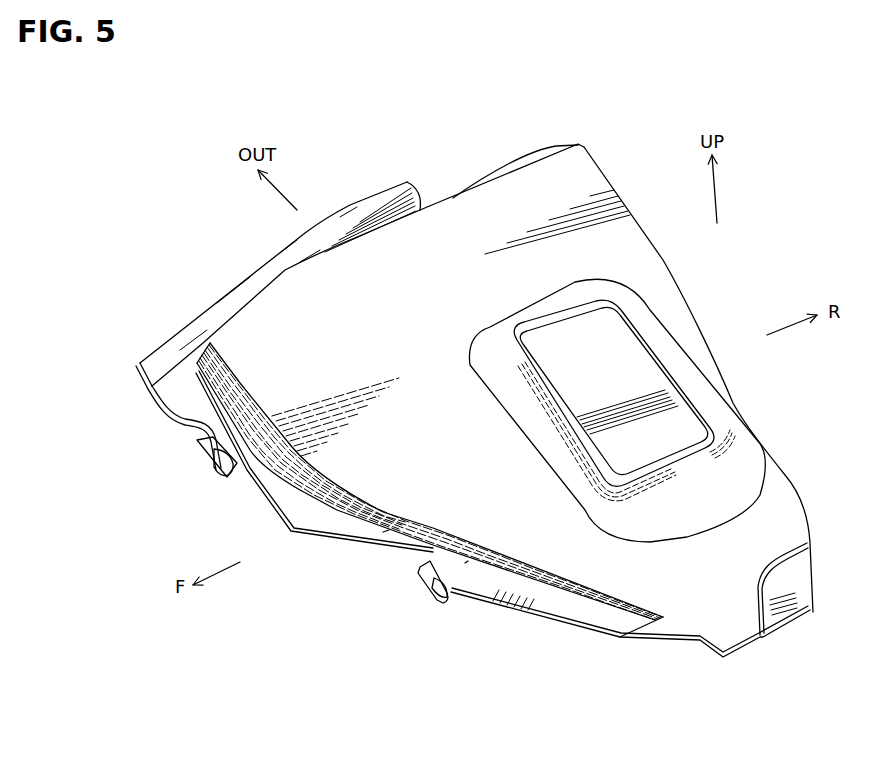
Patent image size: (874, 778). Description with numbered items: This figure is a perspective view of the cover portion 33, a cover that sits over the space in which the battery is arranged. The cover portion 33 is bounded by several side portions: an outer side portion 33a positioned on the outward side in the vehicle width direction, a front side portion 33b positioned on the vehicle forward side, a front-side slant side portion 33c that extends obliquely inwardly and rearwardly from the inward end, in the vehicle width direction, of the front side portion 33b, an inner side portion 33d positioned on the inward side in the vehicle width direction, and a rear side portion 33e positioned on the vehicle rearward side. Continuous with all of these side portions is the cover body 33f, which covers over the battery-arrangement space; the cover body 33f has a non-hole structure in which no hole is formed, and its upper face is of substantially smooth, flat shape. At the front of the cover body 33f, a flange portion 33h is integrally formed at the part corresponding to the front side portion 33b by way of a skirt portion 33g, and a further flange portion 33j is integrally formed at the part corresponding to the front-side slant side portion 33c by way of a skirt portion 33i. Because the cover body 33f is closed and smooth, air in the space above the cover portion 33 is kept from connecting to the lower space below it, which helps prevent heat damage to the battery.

The cover portion 33 is at (443, 170).
The outer side portion 33a is at (225, 278).
The front side portion 33b is at (250, 495).
The front-side slant side portion 33c is at (477, 612).
The inner side portion 33d is at (780, 643).
The rear side portion 33e is at (707, 320).
The cover body 33f is at (423, 335).
The skirt portion 33g is at (228, 384).
The flange portion 33h is at (208, 420).
The skirt portion 33i is at (383, 532).
The flange portion 33j is at (465, 563).